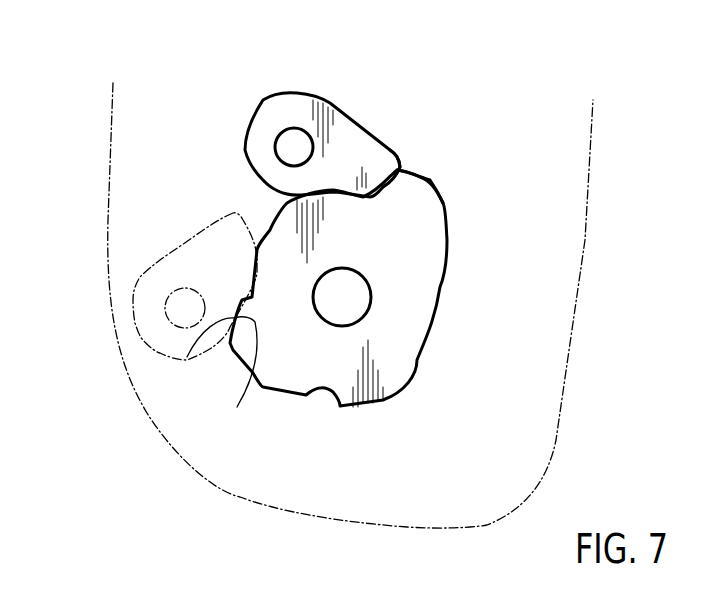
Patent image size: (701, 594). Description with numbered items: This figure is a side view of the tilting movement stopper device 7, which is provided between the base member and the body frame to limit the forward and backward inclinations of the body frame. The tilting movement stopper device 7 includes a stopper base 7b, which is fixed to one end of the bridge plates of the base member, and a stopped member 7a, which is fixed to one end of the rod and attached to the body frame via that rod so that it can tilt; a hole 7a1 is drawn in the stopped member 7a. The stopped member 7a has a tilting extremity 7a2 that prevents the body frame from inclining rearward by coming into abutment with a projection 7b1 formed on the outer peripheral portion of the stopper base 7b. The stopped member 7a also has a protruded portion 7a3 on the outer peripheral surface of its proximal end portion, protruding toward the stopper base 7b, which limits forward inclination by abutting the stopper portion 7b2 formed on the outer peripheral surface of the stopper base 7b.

The tilting movement stopper device 7 is at (205, 193).
The stopped member 7a is at (323, 100).
The pivot hole of first link member 7a1 is at (292, 142).
The tilting extremity 7a2 is at (377, 167).
The protruded portion 7a3 is at (192, 345).
The stopper base 7b is at (437, 305).
The projection 7b1 is at (390, 183).
The stopper portion 7b2 is at (237, 407).